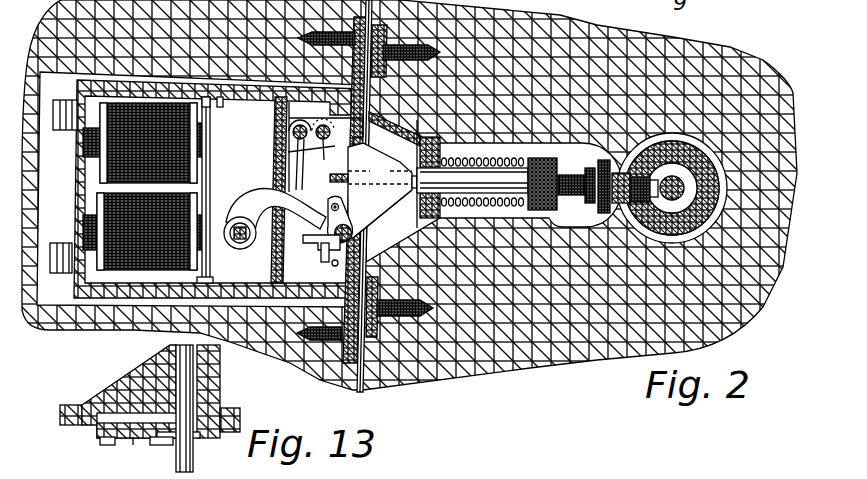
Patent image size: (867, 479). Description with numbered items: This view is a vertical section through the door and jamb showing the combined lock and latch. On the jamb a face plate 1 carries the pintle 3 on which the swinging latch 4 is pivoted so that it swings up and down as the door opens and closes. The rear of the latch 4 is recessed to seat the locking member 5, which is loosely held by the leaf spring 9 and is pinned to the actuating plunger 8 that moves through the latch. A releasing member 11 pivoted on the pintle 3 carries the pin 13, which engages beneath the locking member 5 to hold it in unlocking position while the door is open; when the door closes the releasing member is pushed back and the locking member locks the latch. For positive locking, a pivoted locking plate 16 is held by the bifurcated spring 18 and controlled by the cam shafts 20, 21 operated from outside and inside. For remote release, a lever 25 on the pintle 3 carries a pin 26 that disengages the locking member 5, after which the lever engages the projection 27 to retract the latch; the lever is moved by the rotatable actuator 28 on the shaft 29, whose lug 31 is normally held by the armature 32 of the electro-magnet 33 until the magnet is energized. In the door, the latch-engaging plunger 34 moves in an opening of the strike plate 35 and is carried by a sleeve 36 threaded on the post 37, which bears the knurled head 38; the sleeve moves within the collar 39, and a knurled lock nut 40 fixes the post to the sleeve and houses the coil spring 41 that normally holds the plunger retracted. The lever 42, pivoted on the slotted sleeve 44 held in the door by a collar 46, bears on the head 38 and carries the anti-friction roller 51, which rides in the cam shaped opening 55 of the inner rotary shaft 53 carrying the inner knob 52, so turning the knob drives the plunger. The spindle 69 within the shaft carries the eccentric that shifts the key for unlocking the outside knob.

In FIG. 2, the face plate 1 is at (355, 72).
In FIG. 13, the face plate 1 is at (72, 410).
In FIG. 2, the pintle 3 is at (331, 206).
In FIG. 2, the swinging latch 4 is at (380, 169).
In FIG. 13, the swinging latch 4 is at (147, 378).
In FIG. 13, the locking member 5 is at (107, 438).
In FIG. 2, the actuating plunger 8 is at (330, 178).
In FIG. 13, the actuating plunger 8 is at (190, 450).
In FIG. 13, the leaf spring 9 is at (133, 445).
In FIG. 13, the releasing member 11 is at (203, 390).
In FIG. 2, the pin 13 is at (338, 264).
In FIG. 2, the locking plate 16 is at (326, 147).
In FIG. 2, the bifurcated spring 18 is at (272, 160).
In FIG. 2, the cam shaft 20 is at (330, 146).
In FIG. 2, the cam shaft 21 is at (306, 157).
In FIG. 2, the lever 25 is at (300, 236).
In FIG. 2, the pin 26 is at (382, 190).
In FIG. 2, the projection 27 is at (327, 262).
In FIG. 2, the rotatable actuator 28 is at (262, 189).
In FIG. 2, the shaft 29 is at (242, 243).
In FIG. 2, the lug 31 is at (226, 247).
In FIG. 2, the armature 32 is at (207, 237).
In FIG. 2, the electro-magnet 33 is at (135, 270).
In FIG. 2, the latch-engaging plunger 34 is at (404, 170).
In FIG. 2, the strike plate 35 is at (382, 97).
In FIG. 2, the sleeve 36 is at (382, 214).
In FIG. 2, the post 37 is at (494, 187).
In FIG. 2, the knurled head 38 is at (590, 203).
In FIG. 2, the collar 39 is at (473, 202).
In FIG. 2, the knurled lock nut 40 is at (542, 194).
In FIG. 2, the coil spring 41 is at (492, 206).
In FIG. 2, the lever 42 is at (617, 160).
In FIG. 2, the sleeve 44 is at (710, 223).
In FIG. 2, the collar 46 is at (610, 207).
In FIG. 2, the anti-friction roller 51 is at (642, 195).
In FIG. 2, the inner knob 52 is at (213, 128).
In FIG. 2, the inner rotary shaft 53 is at (688, 192).
In FIG. 2, the cam shaped opening 55 is at (657, 217).
In FIG. 2, the spindle 69 is at (677, 183).